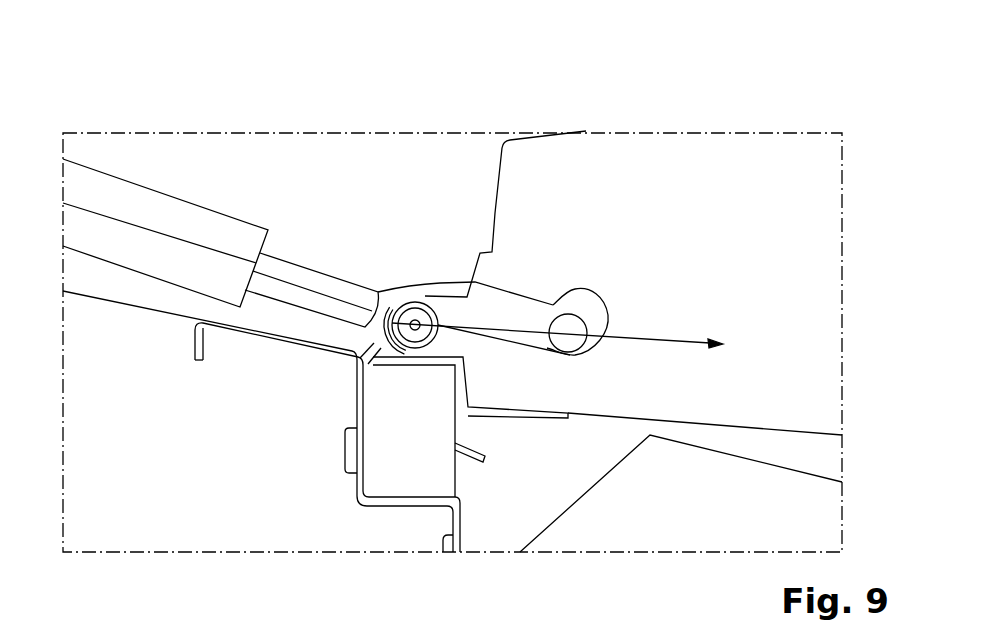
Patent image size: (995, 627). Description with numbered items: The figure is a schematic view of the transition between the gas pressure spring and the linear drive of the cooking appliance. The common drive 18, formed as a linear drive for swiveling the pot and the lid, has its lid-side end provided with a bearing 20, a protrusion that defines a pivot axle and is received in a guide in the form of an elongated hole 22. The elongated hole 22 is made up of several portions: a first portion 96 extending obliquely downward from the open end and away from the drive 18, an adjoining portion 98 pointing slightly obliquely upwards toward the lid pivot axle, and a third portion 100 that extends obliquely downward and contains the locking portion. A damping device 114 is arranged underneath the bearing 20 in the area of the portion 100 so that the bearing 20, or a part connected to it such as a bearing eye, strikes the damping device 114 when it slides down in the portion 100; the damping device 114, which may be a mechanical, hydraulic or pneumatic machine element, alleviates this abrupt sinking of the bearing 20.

The drive 18 is at (737, 150).
The bearing 20 is at (402, 307).
The elongated hole 22 is at (502, 305).
The first portion 96 is at (587, 300).
The adjoining portion 98 is at (533, 310).
The third portion 100 is at (355, 355).
The damping device 114 is at (403, 471).